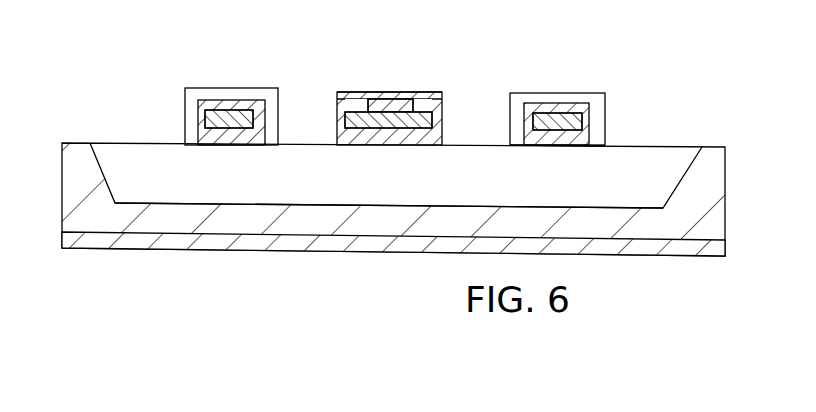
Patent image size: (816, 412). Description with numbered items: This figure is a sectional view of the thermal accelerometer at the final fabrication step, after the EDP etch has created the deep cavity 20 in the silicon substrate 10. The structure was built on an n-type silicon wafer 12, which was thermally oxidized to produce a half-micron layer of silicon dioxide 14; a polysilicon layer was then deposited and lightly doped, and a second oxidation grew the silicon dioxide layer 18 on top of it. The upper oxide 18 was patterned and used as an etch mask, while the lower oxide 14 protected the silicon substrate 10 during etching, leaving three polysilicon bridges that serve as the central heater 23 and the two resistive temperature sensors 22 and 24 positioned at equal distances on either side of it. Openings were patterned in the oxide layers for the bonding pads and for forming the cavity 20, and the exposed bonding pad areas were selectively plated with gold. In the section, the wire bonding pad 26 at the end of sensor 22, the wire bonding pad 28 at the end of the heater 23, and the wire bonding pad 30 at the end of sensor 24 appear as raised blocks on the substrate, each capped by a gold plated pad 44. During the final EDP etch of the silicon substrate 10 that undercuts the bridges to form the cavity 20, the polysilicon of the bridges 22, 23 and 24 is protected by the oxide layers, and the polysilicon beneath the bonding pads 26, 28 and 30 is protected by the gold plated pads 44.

The silicon substrate 10 is at (215, 218).
The silicon wafer 12 is at (415, 243).
The layer of silicon dioxide 14 is at (578, 142).
The layer of silicon dioxide 18 is at (340, 93).
The cavity 20 is at (288, 160).
The sensor 22 is at (207, 120).
The heater 23 is at (443, 103).
The sensor 24 is at (582, 122).
The wire bonding pad 26 is at (183, 92).
The wire bonding pad 28 is at (391, 86).
The wire bonding pad 30 is at (575, 86).
The gold plated pad 44 is at (403, 100).